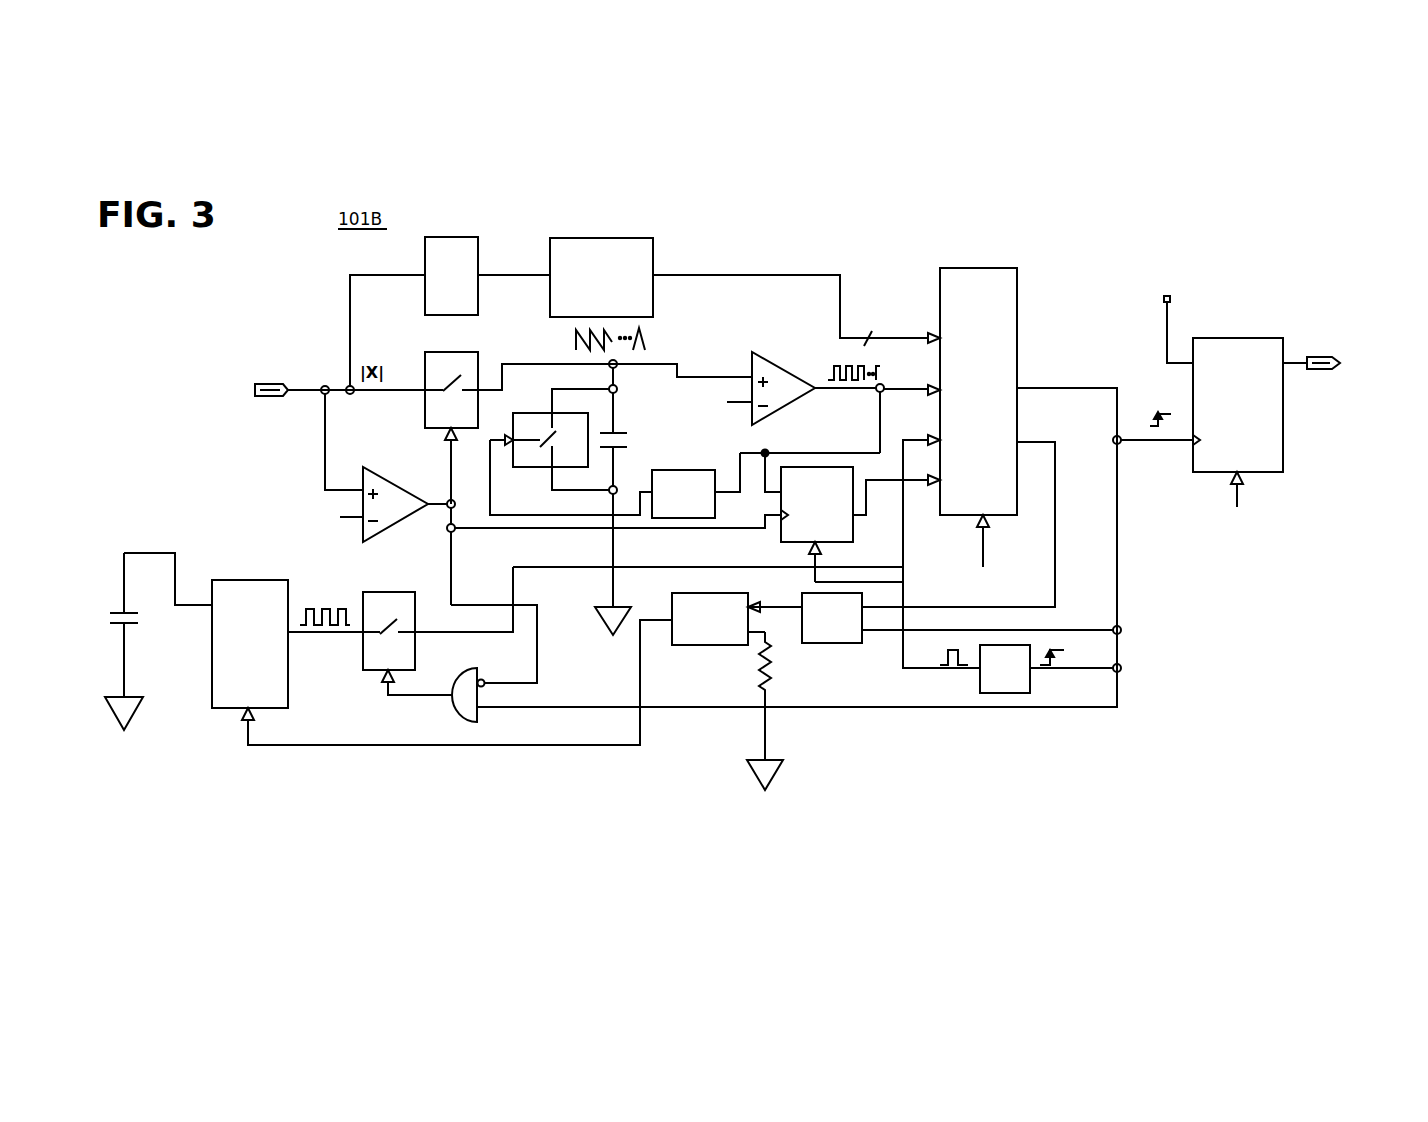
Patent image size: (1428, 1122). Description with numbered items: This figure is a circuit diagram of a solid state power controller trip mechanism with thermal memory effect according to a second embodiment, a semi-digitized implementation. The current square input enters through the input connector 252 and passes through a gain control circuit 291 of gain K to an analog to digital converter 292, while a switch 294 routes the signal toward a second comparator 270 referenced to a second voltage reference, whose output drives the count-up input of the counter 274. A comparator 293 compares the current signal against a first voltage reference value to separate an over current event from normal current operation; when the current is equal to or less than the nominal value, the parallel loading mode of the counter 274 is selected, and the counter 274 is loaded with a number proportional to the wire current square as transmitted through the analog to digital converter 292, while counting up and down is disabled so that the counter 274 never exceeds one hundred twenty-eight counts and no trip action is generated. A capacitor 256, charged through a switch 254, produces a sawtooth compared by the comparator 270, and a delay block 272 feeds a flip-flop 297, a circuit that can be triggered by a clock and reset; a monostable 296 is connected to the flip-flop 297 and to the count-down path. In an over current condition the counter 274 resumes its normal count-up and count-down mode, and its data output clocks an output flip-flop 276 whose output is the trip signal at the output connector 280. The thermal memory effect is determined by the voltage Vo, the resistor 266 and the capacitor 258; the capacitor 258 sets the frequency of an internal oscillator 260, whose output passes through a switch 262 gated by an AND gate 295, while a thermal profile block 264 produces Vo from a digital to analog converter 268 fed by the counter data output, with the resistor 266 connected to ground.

The current square input connector 252 is at (273, 402).
The gain control circuit 291 is at (424, 304).
The analog to digital converter 292 is at (657, 257).
The switch SW1 294 is at (424, 411).
The comparator 293 is at (408, 488).
The capacitor C11 256 is at (622, 427).
The switch SW2 254 is at (532, 472).
The comparator 270 is at (791, 372).
The delay block 272 is at (723, 515).
The flip-flop 297 is at (856, 527).
The counter 274 is at (1019, 288).
The D flip-flop 276 is at (1237, 337).
The trip signal output 280 is at (1331, 378).
The capacitor C22 258 is at (133, 628).
The internal oscillator 260 is at (248, 579).
The switch SW3 262 is at (383, 591).
The AND gate 295 is at (450, 704).
The thermal profile block 264 is at (697, 649).
The resistor R11 266 is at (773, 682).
The digital to analog converter 268 is at (848, 647).
The monostable 296 is at (978, 686).